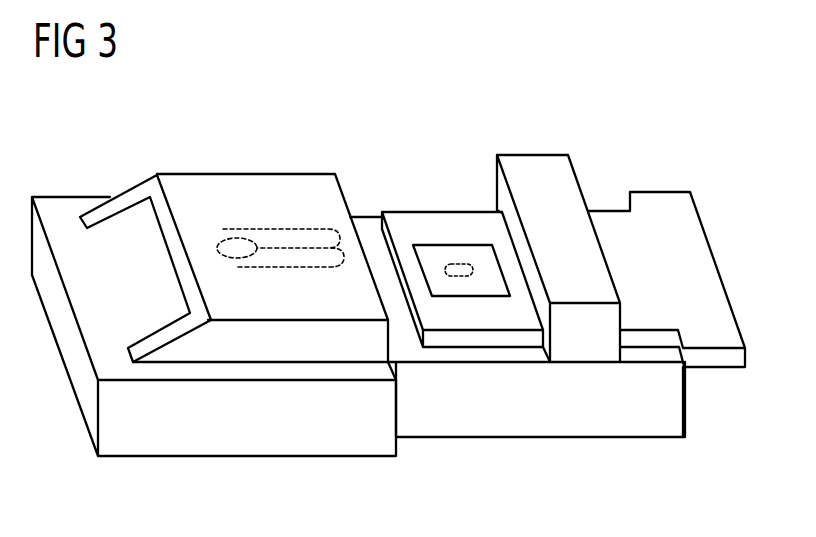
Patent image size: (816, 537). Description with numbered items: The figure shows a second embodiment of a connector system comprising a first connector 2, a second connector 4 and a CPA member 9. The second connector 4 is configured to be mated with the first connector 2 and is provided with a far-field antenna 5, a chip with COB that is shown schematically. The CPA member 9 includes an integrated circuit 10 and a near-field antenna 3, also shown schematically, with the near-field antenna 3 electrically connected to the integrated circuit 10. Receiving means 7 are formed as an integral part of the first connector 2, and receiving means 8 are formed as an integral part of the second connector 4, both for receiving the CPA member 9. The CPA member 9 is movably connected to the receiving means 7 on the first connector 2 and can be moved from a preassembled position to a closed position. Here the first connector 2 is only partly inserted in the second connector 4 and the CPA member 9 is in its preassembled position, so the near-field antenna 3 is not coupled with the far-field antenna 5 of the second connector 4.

The first connector 2 is at (618, 448).
The near-field antenna 3 is at (449, 264).
The second connector 4 is at (323, 465).
The far-field antenna 5 is at (246, 236).
The receiving means 7 is at (557, 163).
The receiving means 8 is at (320, 181).
The CPA member 9 is at (716, 225).
The integrated circuit 10 is at (467, 262).